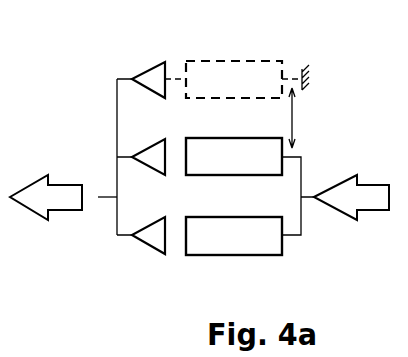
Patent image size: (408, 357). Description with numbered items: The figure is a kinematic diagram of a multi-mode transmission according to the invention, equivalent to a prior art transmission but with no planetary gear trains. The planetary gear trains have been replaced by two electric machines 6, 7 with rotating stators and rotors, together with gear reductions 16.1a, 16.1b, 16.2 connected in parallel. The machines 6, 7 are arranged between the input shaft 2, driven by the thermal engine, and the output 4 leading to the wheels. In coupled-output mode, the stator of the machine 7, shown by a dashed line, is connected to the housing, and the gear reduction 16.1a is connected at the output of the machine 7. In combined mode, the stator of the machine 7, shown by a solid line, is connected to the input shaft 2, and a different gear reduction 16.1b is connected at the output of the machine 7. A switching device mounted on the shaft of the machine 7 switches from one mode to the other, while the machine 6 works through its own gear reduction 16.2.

The gear reduction 16.1a is at (148, 62).
The gear reduction 16.1b is at (147, 148).
The gear reduction 16.2 is at (152, 253).
The machine 7 is at (236, 61).
The machine 6 is at (284, 250).
The input shaft 2 is at (301, 197).
The wheels (Roues) output 4 is at (105, 198).